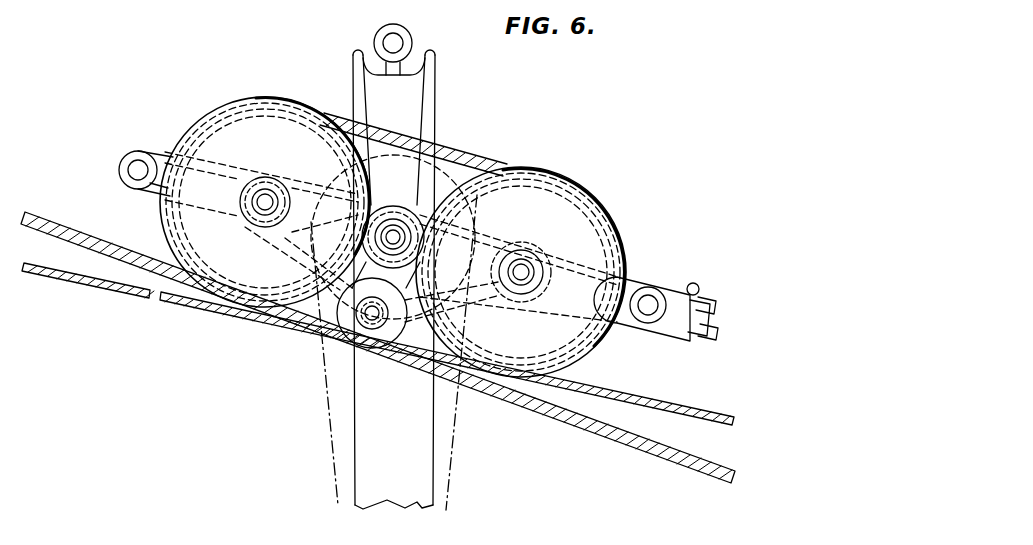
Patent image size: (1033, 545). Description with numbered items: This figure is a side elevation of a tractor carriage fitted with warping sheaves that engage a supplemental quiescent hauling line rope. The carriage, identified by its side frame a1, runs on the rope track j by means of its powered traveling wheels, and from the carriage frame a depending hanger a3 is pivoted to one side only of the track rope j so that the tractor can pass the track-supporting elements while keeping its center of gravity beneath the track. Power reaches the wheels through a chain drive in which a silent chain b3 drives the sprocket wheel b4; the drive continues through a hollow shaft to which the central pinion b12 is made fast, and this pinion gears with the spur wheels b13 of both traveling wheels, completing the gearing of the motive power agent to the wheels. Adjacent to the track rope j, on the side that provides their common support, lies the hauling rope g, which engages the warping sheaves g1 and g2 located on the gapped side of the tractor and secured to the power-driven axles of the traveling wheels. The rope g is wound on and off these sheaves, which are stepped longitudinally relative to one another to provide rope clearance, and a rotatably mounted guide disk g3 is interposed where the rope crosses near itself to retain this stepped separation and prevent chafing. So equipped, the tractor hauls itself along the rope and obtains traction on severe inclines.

The spur wheel b13 is at (215, 113).
The side frame a1 is at (166, 150).
The warping sheave g1 is at (261, 210).
The hanger a3 is at (394, 266).
The central pinion b12 is at (374, 204).
The sprocket wheel b4 is at (453, 170).
The warping sheave g2 is at (511, 262).
The track rope j is at (103, 240).
The supplemental quiescent hauling line rope g is at (122, 287).
The guide disk g3 is at (373, 343).
The silent chain b3 is at (332, 450).